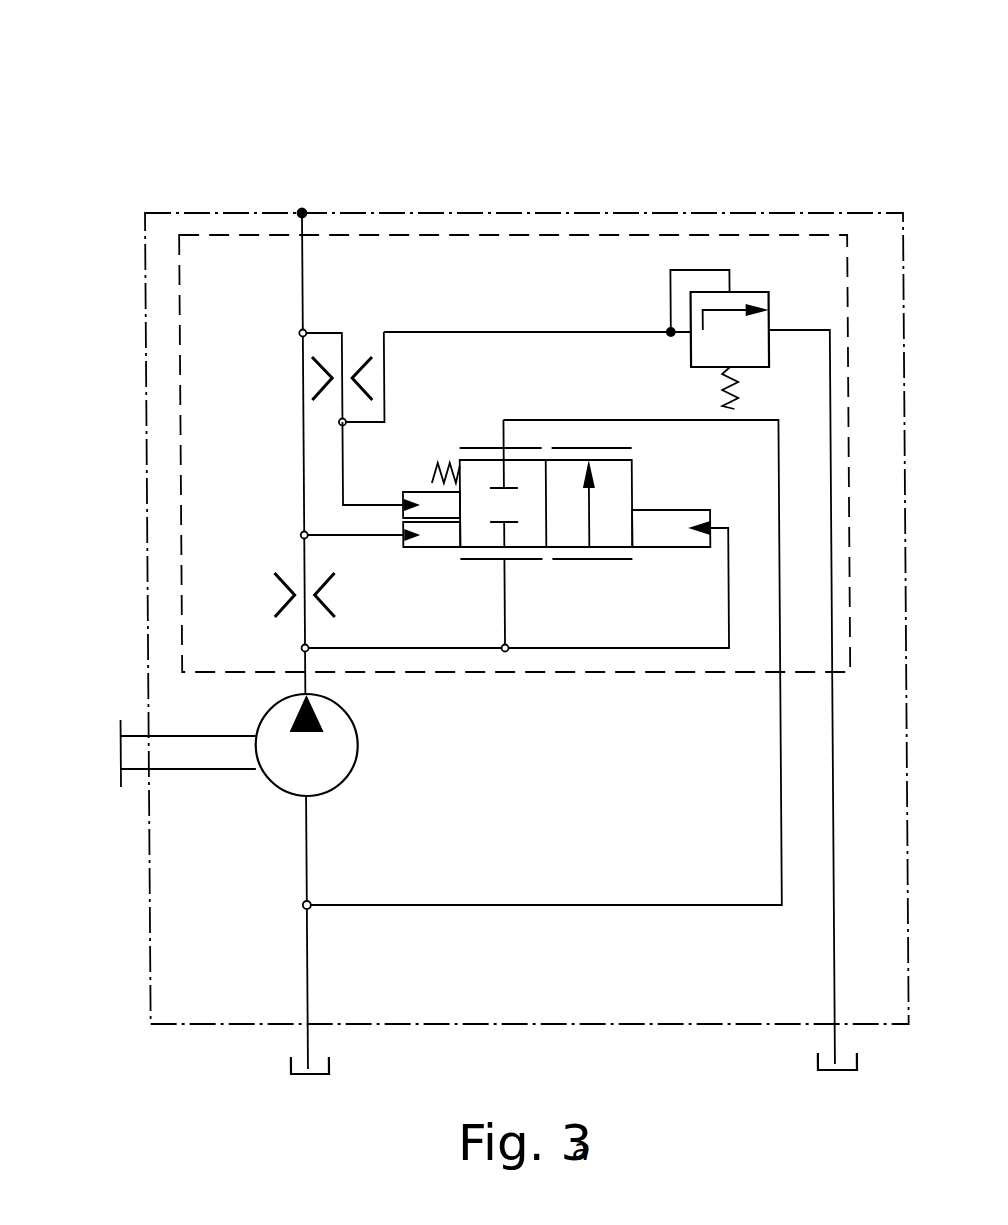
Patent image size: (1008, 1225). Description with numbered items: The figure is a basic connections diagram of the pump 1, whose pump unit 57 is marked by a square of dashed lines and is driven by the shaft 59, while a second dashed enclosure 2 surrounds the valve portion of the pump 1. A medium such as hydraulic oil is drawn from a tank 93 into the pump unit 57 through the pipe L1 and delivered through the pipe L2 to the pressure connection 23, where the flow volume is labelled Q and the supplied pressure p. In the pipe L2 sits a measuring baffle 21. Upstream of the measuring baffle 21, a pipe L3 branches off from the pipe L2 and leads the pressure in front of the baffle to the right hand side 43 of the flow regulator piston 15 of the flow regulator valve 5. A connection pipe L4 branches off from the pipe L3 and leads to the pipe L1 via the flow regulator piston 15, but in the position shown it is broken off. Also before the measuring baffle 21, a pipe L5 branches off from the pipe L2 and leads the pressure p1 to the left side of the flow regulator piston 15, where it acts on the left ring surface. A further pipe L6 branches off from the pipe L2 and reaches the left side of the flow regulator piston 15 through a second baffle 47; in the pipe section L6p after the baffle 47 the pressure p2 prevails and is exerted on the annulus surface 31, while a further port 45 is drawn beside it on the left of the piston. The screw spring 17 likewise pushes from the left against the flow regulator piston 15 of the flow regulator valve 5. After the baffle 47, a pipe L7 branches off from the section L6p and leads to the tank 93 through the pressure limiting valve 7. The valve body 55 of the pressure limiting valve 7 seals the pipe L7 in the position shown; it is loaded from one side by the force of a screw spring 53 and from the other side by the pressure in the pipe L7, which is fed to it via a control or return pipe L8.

The pump 1 is at (571, 122).
The control unit 2 is at (178, 617).
The flow regulator valve 5 is at (566, 492).
The pressure limiting valve 7 is at (739, 591).
The flow regulator piston 15 is at (620, 528).
The screw spring 17 is at (432, 463).
The measuring baffle 21 is at (277, 595).
The pressure connection 23 is at (302, 213).
The annulus surface 31 is at (428, 506).
The right hand side of the flow regulator piston 43 is at (680, 525).
The control port 45 is at (442, 535).
The second baffle 47 is at (358, 350).
The screw spring 53 is at (720, 398).
The valve body 55 is at (750, 348).
The pump unit 57 is at (342, 755).
The shaft 59 is at (213, 769).
The tank 93 is at (332, 1060).
The pipe L1 is at (305, 855).
The pipe L2 is at (302, 410).
The pipe L3 is at (573, 648).
The connection pipe L4 is at (505, 590).
The pipe L5 is at (332, 535).
The pipe L6 is at (327, 332).
The pipe section L6' L6p is at (341, 460).
The pipe L7 is at (533, 330).
The control or return pipe L8 is at (697, 270).